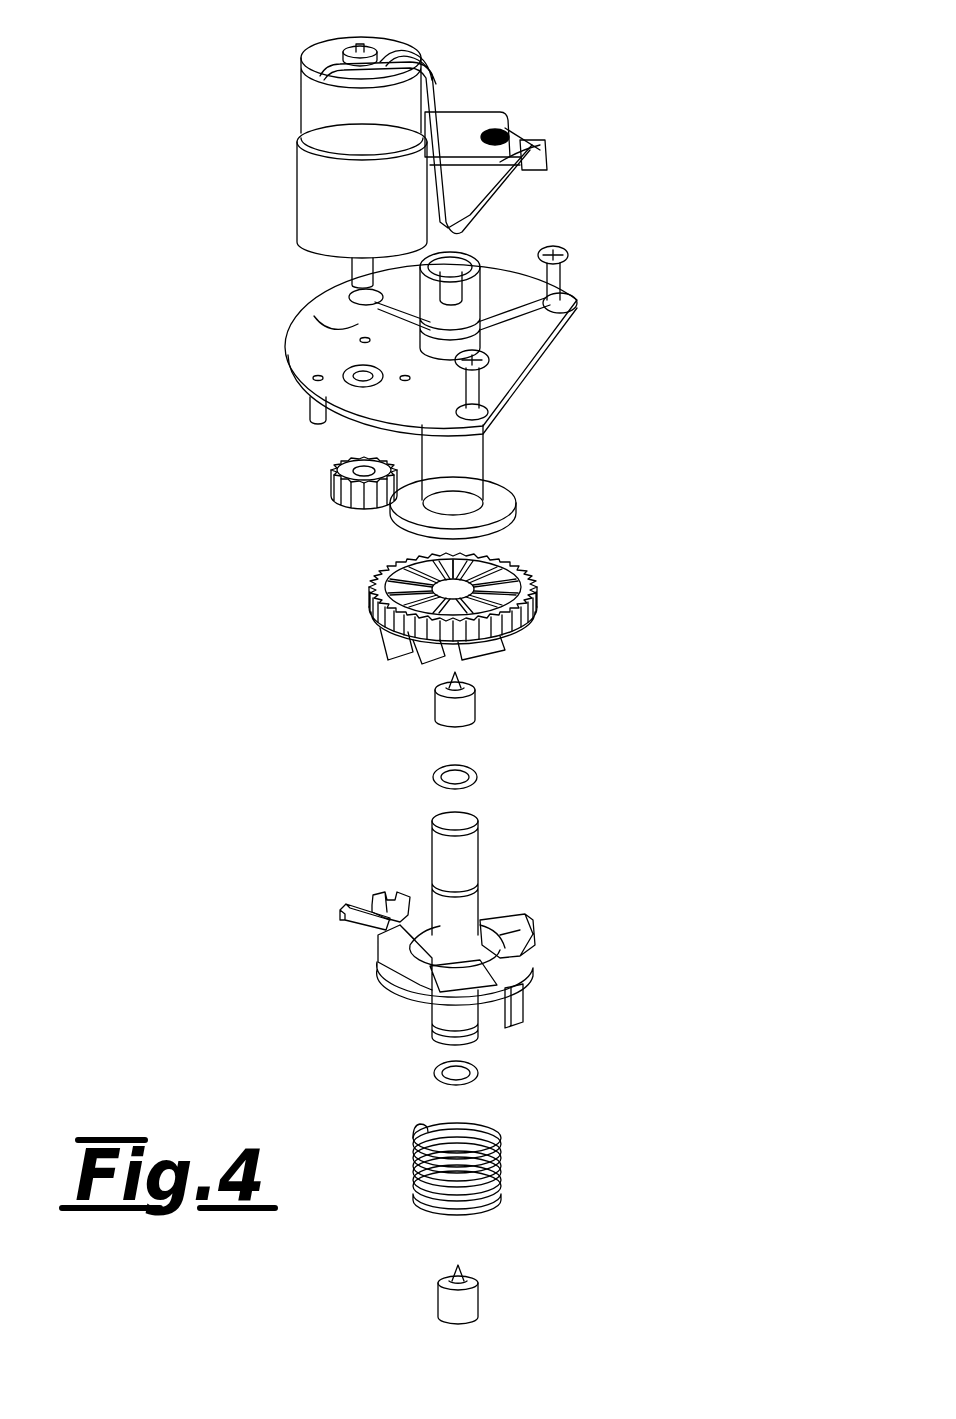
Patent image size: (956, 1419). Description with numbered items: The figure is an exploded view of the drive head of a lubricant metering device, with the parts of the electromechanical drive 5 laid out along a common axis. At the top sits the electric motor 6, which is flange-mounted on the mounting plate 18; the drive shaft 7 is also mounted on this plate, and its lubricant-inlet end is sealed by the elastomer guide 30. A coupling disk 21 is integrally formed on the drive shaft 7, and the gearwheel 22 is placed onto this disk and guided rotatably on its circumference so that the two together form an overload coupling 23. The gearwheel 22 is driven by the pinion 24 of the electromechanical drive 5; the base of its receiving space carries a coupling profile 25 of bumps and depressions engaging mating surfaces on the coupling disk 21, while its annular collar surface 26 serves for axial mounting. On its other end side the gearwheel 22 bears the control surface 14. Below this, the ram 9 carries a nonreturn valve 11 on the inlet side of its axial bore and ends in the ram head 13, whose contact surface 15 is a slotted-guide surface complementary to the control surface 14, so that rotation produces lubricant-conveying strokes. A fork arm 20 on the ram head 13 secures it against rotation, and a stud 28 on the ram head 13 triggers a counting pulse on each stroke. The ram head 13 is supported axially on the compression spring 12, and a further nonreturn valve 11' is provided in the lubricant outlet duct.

The electromechanical drive 5 is at (565, 70).
The electric motor 6 is at (312, 187).
The elastomer guide 30 is at (483, 250).
The mounting plate 18 is at (525, 345).
The drive shaft 7 is at (475, 455).
The coupling disk 21 is at (520, 492).
The overload coupling 23 is at (540, 516).
The pinion 24 is at (345, 490).
The coupling profile 25 is at (390, 562).
The gearwheel 22 is at (375, 592).
The annular collar surface 26 is at (415, 640).
The control surface 14 is at (430, 650).
The nonreturn valve 11 is at (504, 732).
The contact surface 15 is at (412, 958).
The ram 9 is at (472, 860).
The fork arm 20 is at (365, 930).
The ram head 13 is at (540, 962).
The stud 28 is at (520, 1010).
The compression spring 12 is at (500, 1165).
The nonreturn valve 11' is at (371, 1304).